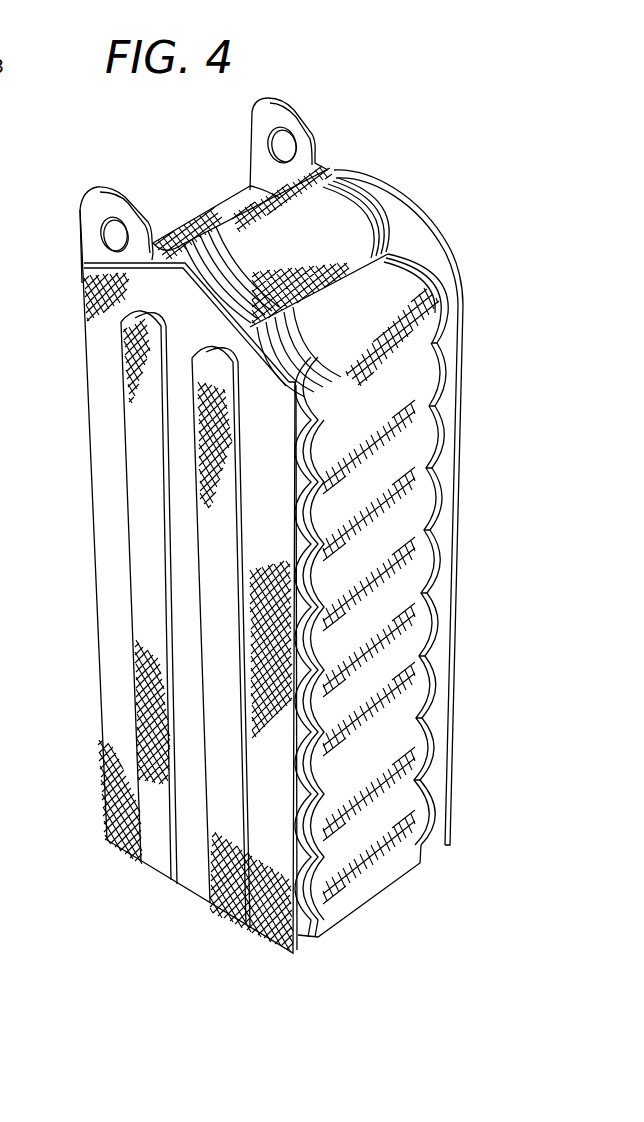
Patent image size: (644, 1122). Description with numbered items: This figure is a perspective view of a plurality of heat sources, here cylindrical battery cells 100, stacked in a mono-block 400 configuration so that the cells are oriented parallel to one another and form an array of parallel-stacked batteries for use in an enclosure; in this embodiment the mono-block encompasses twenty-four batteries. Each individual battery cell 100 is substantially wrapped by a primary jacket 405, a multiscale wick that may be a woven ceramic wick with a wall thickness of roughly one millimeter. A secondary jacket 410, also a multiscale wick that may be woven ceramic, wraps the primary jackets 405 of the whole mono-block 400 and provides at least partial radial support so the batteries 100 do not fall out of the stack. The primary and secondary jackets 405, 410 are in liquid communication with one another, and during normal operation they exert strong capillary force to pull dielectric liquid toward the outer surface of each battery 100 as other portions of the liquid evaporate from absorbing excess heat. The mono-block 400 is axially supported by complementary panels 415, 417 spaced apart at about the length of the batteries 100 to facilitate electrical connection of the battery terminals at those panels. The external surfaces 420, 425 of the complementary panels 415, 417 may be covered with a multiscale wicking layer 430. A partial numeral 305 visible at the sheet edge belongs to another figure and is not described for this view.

The cylindrical battery cell 100 is at (346, 178).
The battery cell module (partial, adjacent figure) 305 is at (12, 930).
The mono-block 400 is at (347, 242).
The primary jacket 405 is at (440, 364).
The secondary jacket 410 is at (419, 703).
The complementary panel 415 is at (285, 100).
The complementary panel 417 is at (82, 200).
The external surface 420 is at (467, 433).
The external surface 425 is at (96, 258).
The multiscale wicking layer 430 is at (110, 638).